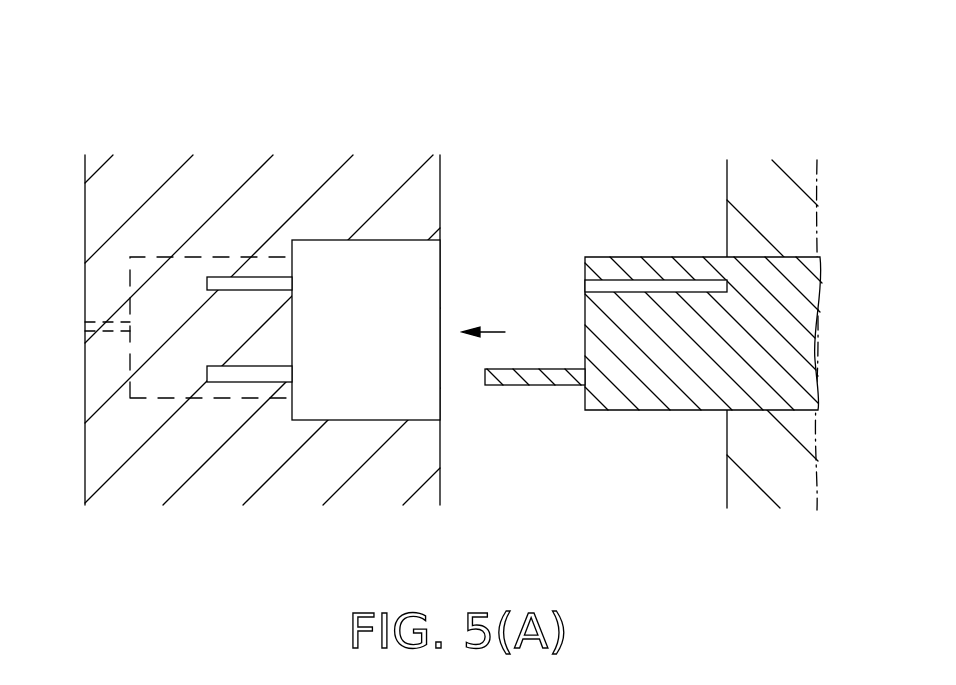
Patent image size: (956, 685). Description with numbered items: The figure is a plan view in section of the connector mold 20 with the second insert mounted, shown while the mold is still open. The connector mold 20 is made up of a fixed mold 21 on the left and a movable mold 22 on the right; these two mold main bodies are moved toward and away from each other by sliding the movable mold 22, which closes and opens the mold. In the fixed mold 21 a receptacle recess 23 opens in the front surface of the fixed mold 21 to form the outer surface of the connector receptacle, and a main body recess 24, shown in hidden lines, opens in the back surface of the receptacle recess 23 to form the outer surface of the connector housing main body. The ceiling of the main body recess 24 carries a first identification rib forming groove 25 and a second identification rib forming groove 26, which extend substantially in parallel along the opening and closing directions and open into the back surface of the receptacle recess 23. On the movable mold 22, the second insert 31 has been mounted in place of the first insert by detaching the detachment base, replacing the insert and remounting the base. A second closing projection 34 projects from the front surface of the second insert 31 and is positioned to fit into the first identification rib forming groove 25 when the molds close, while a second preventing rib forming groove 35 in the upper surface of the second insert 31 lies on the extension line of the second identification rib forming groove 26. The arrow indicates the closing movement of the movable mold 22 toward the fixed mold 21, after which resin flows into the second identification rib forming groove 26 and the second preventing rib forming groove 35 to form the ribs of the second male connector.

The connector mold 20 is at (491, 45).
The fixed mold 21 is at (336, 188).
The movable mold 22 is at (751, 168).
The receptacle recess 23 is at (368, 422).
The main body recess 24 is at (133, 398).
The first identification rib forming groove 25 is at (237, 383).
The second identification rib forming groove 26 is at (232, 283).
The second insert 31 is at (806, 351).
The second closing projection 34 is at (537, 385).
The second preventing rib forming groove 35 is at (592, 285).